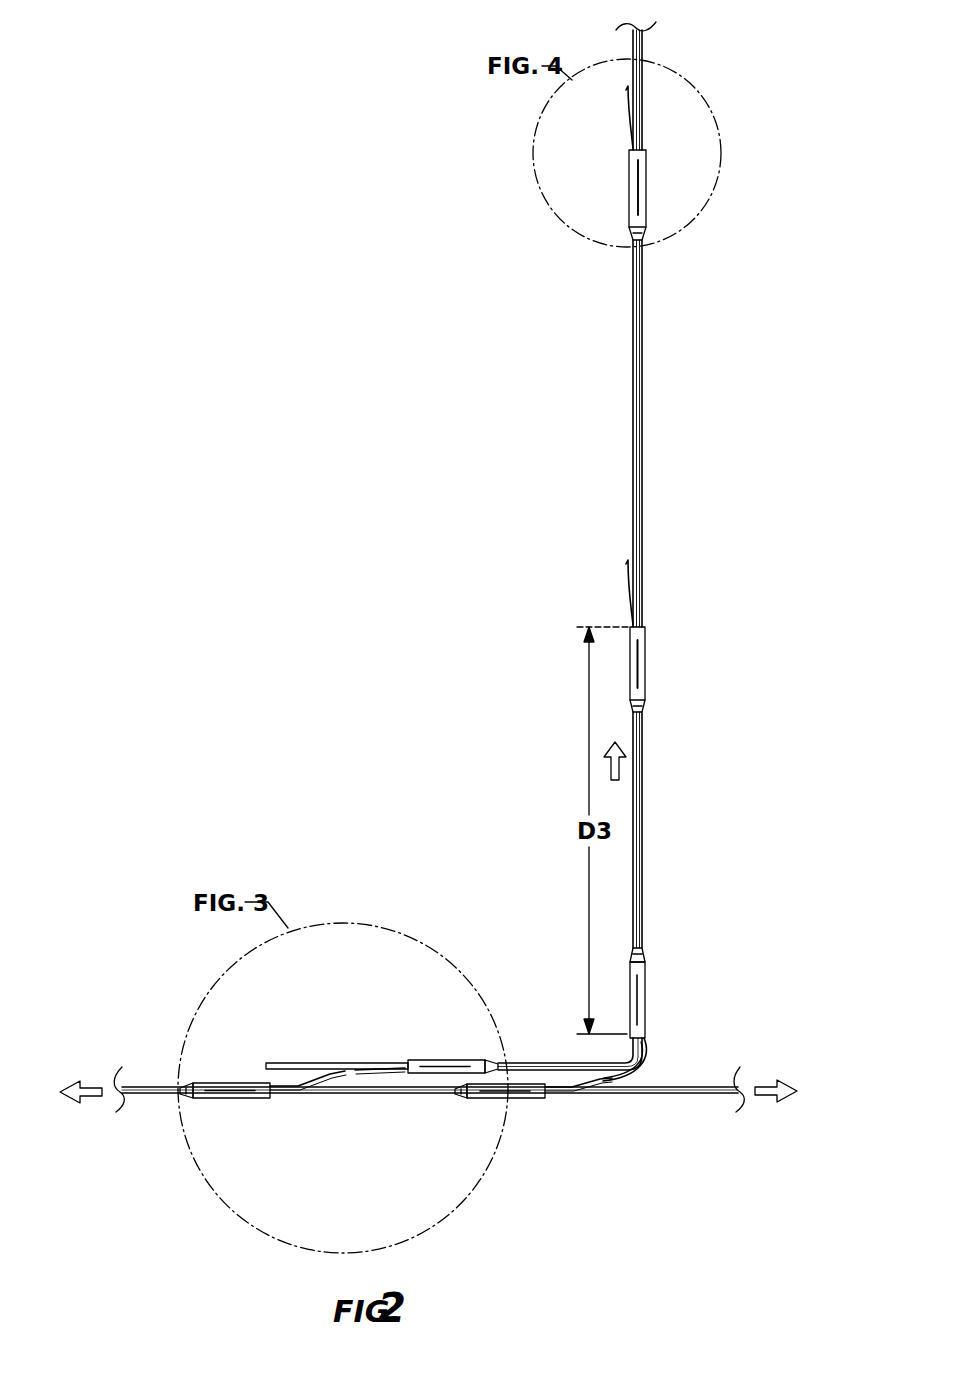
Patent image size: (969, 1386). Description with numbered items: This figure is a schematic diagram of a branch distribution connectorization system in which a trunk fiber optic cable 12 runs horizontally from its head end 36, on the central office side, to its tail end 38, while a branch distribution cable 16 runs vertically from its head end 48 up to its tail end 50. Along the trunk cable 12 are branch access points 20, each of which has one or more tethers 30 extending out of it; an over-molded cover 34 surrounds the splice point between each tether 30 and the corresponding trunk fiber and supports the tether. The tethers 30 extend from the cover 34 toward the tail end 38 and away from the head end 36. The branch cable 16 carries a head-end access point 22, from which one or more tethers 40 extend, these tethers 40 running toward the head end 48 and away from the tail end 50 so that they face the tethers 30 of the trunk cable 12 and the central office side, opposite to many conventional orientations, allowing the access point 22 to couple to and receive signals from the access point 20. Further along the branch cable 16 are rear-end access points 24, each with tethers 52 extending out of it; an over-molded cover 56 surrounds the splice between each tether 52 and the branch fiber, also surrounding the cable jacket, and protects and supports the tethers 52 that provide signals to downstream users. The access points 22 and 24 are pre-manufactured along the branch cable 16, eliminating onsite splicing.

The trunk fiber optic cable 12 is at (666, 1096).
The branch distribution cable 16 is at (643, 420).
The branch access point 20 is at (210, 1130).
The head-end access point 22 is at (510, 1010).
The rear-end access point 24 is at (658, 192).
The tether 30 is at (320, 1082).
The over-molded cover 34 is at (232, 1098).
The head end 36 is at (80, 1120).
The tail end 38 is at (770, 1122).
The tether 40 is at (358, 1062).
The head end 48 is at (256, 1058).
The tail end 50 is at (684, 28).
The tether 52 is at (630, 110).
The over-molded cover 56 is at (630, 186).